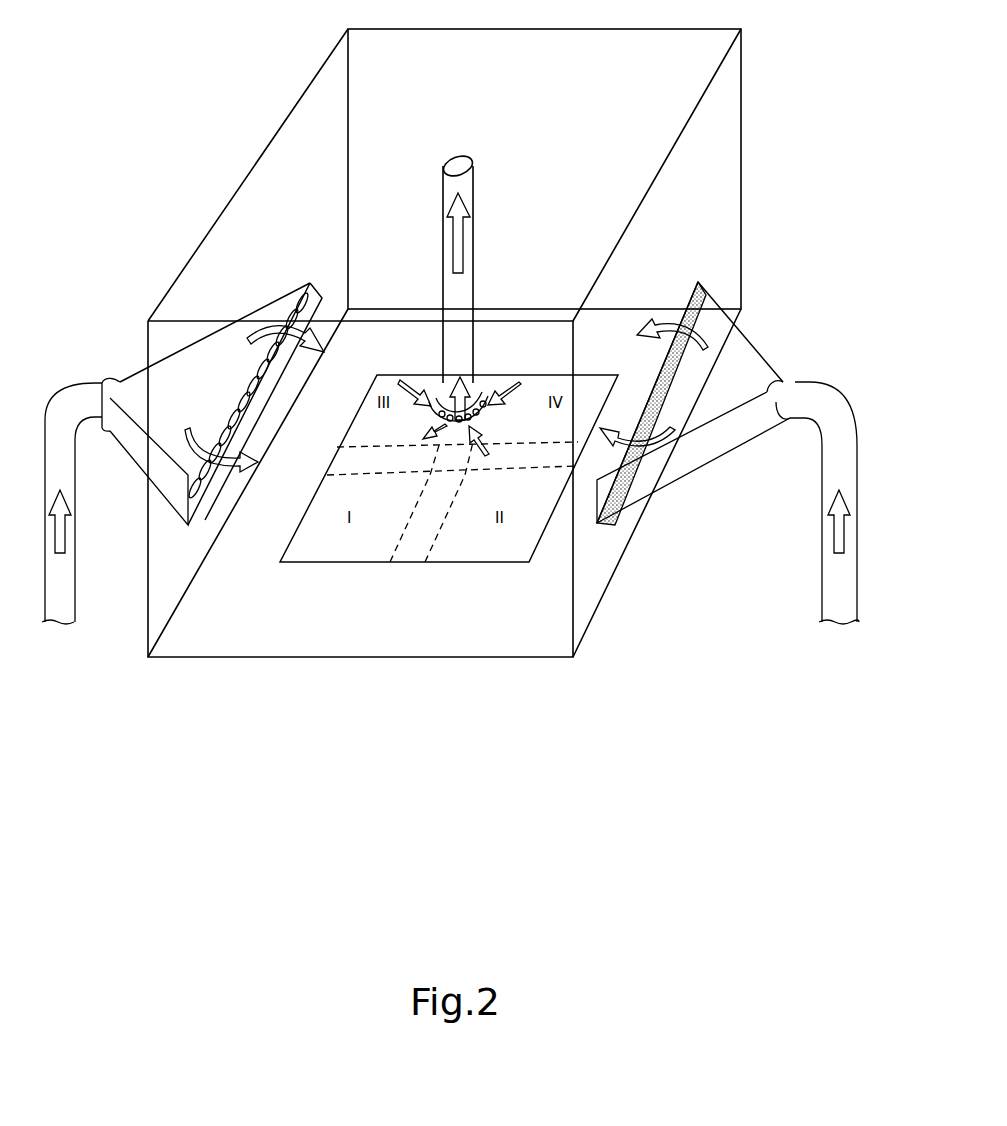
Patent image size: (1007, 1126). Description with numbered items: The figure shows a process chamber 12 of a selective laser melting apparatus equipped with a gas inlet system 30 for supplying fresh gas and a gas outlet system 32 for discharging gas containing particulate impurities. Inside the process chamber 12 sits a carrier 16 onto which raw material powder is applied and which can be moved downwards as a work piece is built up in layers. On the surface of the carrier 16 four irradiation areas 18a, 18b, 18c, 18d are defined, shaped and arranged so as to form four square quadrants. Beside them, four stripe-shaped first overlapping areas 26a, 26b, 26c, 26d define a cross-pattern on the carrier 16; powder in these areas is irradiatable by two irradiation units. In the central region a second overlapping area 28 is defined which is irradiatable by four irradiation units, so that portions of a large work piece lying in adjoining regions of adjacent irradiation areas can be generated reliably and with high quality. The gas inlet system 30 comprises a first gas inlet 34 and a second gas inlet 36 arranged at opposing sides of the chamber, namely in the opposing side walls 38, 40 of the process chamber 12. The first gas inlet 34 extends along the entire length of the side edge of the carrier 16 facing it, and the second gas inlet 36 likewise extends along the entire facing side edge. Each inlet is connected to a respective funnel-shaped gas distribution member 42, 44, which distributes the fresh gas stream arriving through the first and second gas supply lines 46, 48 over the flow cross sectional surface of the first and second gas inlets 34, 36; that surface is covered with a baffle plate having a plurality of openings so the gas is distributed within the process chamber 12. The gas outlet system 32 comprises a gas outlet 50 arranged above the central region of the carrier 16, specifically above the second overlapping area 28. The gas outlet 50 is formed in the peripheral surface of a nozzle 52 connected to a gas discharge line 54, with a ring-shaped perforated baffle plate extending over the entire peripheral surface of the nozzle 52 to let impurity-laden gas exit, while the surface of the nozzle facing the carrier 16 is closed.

The process chamber 12 is at (663, 46).
The carrier 16 is at (547, 374).
The irradiation area 18a is at (385, 382).
The irradiation area 18b is at (312, 553).
The irradiation area 18c is at (595, 387).
The irradiation area 18d is at (490, 553).
The first overlapping area 26a is at (412, 551).
The first overlapping area 26b is at (507, 468).
The first overlapping area 26c is at (487, 383).
The first overlapping area 26d is at (338, 453).
The second overlapping area 28 is at (465, 453).
The gas inlet system 30 is at (792, 331).
The gas outlet system 32 is at (492, 163).
The first gas inlet 34 is at (311, 295).
The second gas inlet 36 is at (688, 300).
The side wall 38 is at (275, 163).
The side wall 40 is at (741, 209).
The funnel-shaped gas distribution member 42 is at (126, 380).
The funnel-shaped gas distribution member 44 is at (748, 350).
The first gas supply line 46 is at (77, 388).
The second gas supply line 48 is at (810, 387).
The gas outlet 50 is at (426, 414).
The nozzle 52 is at (445, 403).
The gas discharge line 54 is at (474, 208).